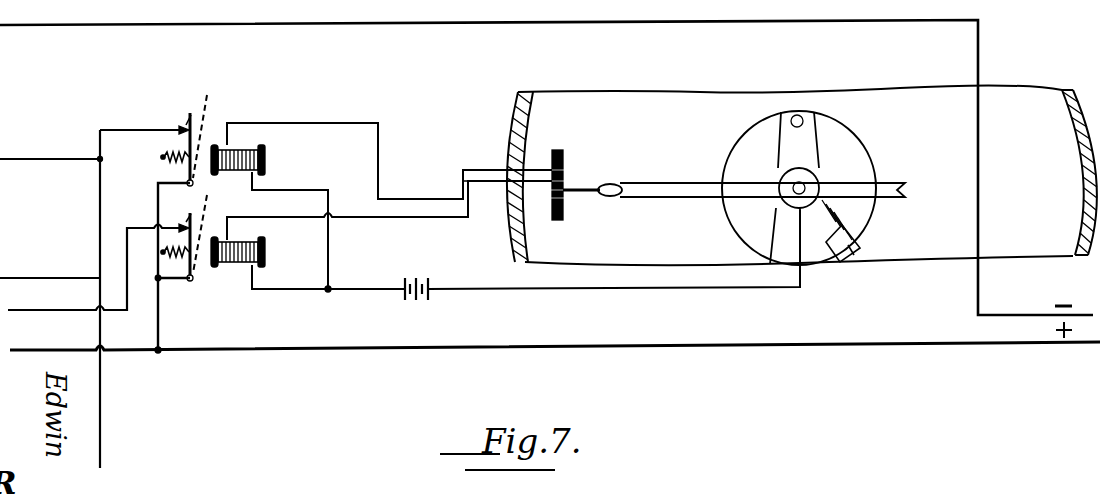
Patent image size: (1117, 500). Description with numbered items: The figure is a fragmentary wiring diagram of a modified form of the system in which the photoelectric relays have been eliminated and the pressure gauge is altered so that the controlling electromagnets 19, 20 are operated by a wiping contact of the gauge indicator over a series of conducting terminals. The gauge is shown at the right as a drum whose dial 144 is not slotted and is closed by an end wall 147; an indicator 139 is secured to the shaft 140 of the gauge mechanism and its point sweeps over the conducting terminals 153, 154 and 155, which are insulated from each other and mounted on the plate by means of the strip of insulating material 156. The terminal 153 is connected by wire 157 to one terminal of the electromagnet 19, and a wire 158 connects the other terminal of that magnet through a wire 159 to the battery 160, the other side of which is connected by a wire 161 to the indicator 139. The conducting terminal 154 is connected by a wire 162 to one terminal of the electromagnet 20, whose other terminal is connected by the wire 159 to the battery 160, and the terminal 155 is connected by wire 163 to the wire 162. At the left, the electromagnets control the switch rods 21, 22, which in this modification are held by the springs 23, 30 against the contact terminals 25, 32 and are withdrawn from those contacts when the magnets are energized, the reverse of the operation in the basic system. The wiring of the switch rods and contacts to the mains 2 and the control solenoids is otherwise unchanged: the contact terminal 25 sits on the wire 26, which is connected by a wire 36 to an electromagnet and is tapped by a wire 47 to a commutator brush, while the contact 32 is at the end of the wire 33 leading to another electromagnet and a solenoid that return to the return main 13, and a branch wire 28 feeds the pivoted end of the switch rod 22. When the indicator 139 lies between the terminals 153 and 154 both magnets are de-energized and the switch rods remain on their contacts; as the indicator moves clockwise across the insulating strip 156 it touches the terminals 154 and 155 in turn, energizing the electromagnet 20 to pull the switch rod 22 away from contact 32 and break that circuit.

The return main 13 is at (519, 11).
The mains 2 is at (650, 340).
The wire 26 is at (140, 130).
The wire 36 is at (75, 160).
The wire 47 is at (72, 278).
The wire 33 is at (140, 230).
The switch rod 21 is at (208, 100).
The contact terminal 25 is at (186, 126).
The spring 23 is at (168, 162).
The switch rod 22 is at (203, 206).
The contact 32 is at (186, 224).
The spring 30 is at (168, 258).
The branch wire 28 is at (158, 312).
The electromagnet 19 is at (232, 150).
The electromagnet 20 is at (236, 242).
The wire 157 is at (298, 124).
The wire 158 is at (321, 190).
The wire 159 is at (368, 289).
The battery 160 is at (416, 276).
The wire 161 is at (528, 289).
The wire 162 is at (498, 158).
The dial 144 is at (643, 92).
The drum end wall 147 is at (1063, 90).
The wire 163 is at (566, 131).
The conducting terminal 155 is at (564, 168).
The conducting terminal 154 is at (564, 181).
The conducting terminal 153 is at (564, 200).
The strip of insulating material 156 is at (558, 222).
The indicator 139 is at (685, 183).
The shaft 140 is at (805, 182).